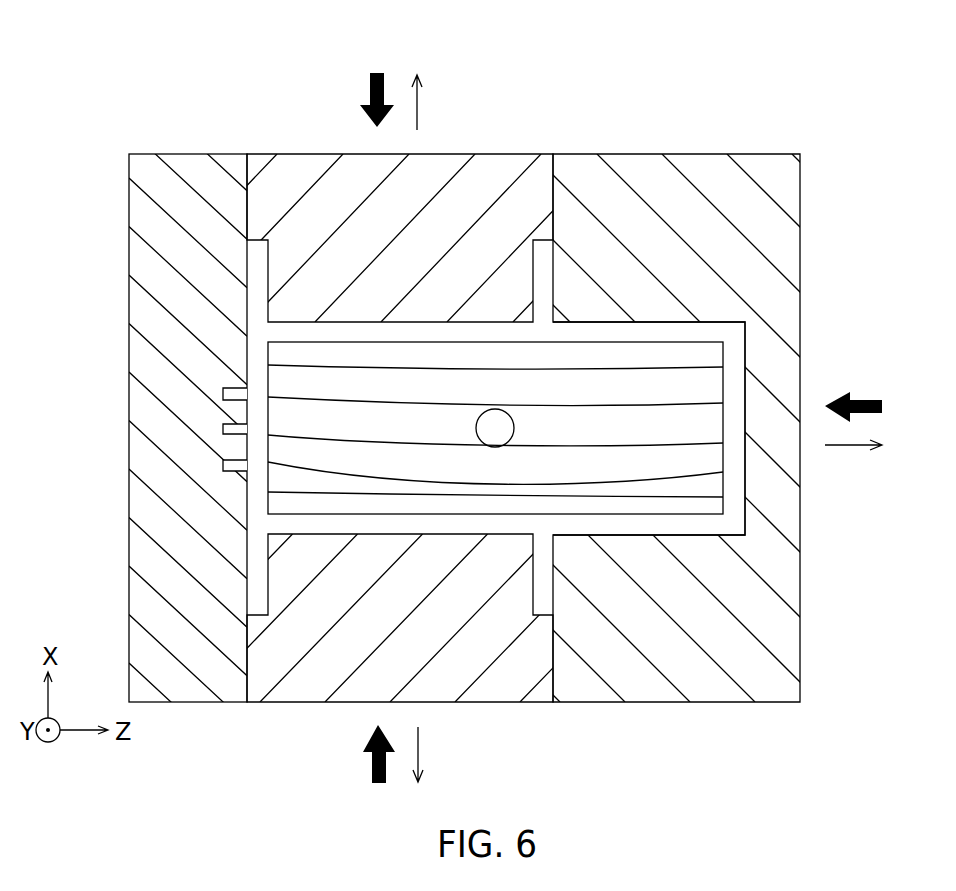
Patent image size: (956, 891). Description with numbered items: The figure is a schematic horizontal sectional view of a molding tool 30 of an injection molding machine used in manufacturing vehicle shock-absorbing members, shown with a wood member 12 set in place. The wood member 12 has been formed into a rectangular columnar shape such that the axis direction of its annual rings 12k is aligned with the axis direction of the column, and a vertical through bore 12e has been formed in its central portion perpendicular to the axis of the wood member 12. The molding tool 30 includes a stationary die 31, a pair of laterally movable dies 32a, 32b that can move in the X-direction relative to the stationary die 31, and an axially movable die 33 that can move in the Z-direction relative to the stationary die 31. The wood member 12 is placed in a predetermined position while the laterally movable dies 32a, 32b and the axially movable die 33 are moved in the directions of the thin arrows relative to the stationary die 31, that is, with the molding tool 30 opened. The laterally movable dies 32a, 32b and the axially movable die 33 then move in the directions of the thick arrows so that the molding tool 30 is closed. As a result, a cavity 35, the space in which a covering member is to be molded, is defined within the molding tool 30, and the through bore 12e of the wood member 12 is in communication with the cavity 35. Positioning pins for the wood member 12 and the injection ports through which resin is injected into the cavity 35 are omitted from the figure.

The molding tool 30 is at (484, 404).
The stationary die 31 is at (192, 213).
The laterally movable die 32a is at (328, 212).
The laterally movable die 32b is at (481, 648).
The axially movable die 33 is at (693, 217).
The cavity 35 is at (625, 522).
The wood member 12 is at (575, 295).
The through bore 12e is at (489, 424).
The annual rings 12k is at (645, 407).